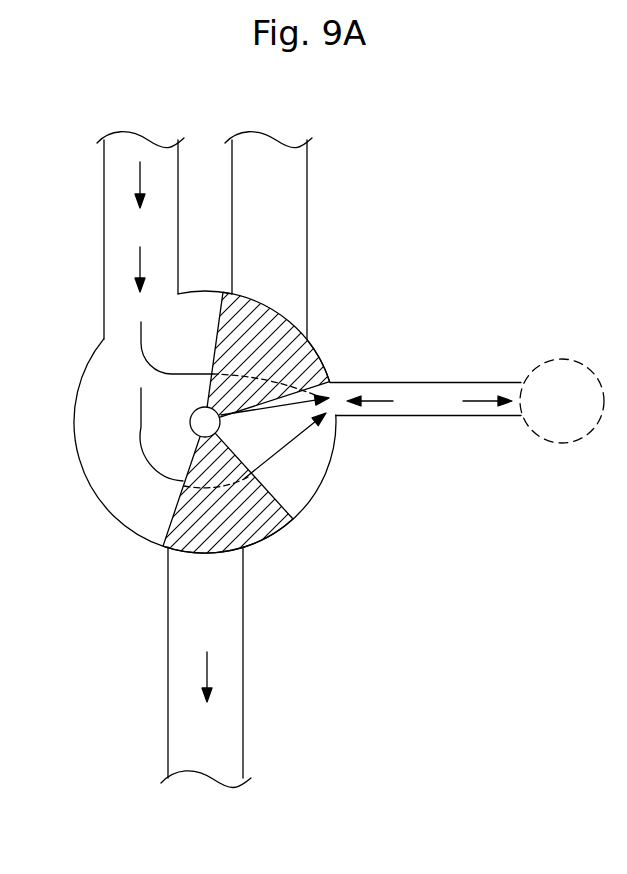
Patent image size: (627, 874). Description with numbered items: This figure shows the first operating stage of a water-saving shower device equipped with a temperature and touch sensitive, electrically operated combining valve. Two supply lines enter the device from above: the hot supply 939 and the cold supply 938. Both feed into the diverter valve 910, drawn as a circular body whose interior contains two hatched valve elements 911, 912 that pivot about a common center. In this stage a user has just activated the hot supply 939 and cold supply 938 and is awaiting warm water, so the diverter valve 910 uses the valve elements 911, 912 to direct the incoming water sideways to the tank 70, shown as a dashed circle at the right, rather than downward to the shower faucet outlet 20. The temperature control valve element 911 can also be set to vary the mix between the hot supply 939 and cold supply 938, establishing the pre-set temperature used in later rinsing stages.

The hot supply 939 is at (115, 183).
The cold supply 938 is at (297, 183).
The diverter valve 910 is at (329, 474).
The valve element 911 is at (246, 358).
The valve element 912 is at (207, 516).
The tank 70 is at (556, 412).
The shower faucet outlet pipe 20 is at (233, 730).